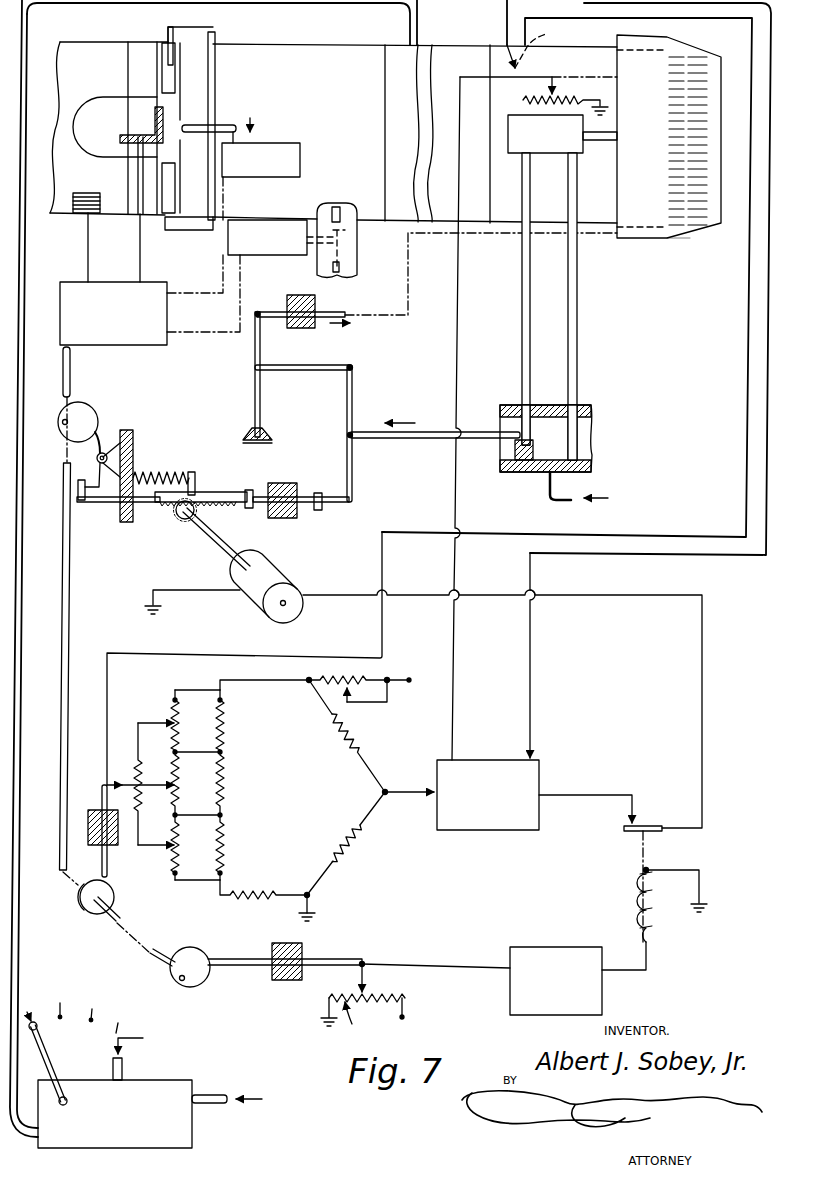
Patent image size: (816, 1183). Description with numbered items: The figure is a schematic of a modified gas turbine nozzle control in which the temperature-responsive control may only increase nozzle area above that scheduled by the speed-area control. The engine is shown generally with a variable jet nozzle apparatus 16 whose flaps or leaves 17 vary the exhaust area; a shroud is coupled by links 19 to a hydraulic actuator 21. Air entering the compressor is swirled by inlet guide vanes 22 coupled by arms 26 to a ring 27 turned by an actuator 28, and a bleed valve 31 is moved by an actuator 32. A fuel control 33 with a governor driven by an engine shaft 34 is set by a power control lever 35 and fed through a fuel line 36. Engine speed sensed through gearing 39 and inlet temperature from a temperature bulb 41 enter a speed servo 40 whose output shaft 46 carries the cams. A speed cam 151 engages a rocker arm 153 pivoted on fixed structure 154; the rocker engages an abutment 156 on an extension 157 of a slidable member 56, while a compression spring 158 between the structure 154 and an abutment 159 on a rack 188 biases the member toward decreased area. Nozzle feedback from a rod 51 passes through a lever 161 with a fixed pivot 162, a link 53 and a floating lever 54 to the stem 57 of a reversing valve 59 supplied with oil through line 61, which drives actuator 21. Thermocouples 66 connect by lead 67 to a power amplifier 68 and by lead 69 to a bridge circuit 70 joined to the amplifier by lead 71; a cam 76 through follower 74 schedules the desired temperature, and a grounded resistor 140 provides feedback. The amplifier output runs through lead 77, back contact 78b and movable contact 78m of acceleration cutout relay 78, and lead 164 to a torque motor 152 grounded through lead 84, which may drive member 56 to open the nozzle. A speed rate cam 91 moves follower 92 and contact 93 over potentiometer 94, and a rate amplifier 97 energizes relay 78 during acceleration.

The variable jet nozzle apparatus 16 is at (683, 233).
The flaps or leaves 17 is at (698, 127).
The links 19 is at (606, 142).
The actuator 21 is at (545, 154).
The inlet guide vanes 22 is at (168, 60).
The arms 26 is at (214, 28).
The ring 27 is at (215, 106).
The actuator 28 is at (276, 143).
The valve 31 is at (345, 262).
The actuator 32 is at (258, 220).
The fuel control 33 is at (193, 1122).
The shaft 34 is at (113, 1070).
The pilot's power control lever 35 is at (44, 1045).
The line 36 is at (216, 1095).
The gearing 39 is at (140, 132).
The speed servo 40 is at (60, 310).
The temperature bulb 41 is at (85, 195).
The shaft 46 is at (63, 365).
The rod 51 is at (318, 312).
The link 53 is at (318, 370).
The floating lever 54 is at (353, 450).
The slidable member 56 is at (330, 505).
The valve stem 57 is at (500, 433).
The reversing valve 59 is at (590, 406).
The oil line 61 is at (545, 490).
The thermocouples 66 is at (540, 44).
The lead 67 is at (538, 728).
The power amplifier 68 is at (468, 832).
The lead 69 is at (107, 712).
The bridge circuit 70 is at (196, 690).
The lead 71 is at (408, 795).
The cam follower 74 is at (104, 805).
The cam 76 is at (110, 892).
The lead 77 is at (612, 795).
The acceleration cutout relay 78 is at (658, 927).
The back contact 78b is at (634, 826).
The movable contact 78m is at (655, 835).
The lead 84 is at (212, 590).
The speed rate cam 91 is at (200, 980).
The cam follower 92 is at (334, 958).
The contact 93 is at (372, 992).
The potentiometer 94 is at (354, 1024).
The rate amplifier 97 is at (574, 948).
The grounded resistor 140 is at (566, 93).
The speed cam 151 is at (84, 412).
The temperature control motor 152 is at (272, 578).
The rocker arm 153 is at (120, 432).
The fixed structure 154 is at (128, 522).
The abutment 156 is at (82, 498).
The extension 157 is at (110, 504).
The compression spring 158 is at (160, 472).
The abutment 159 is at (196, 492).
The lever 161 is at (262, 390).
The fixed pivot 162 is at (266, 428).
The lead 164 is at (519, 594).
The rack 188 is at (204, 513).